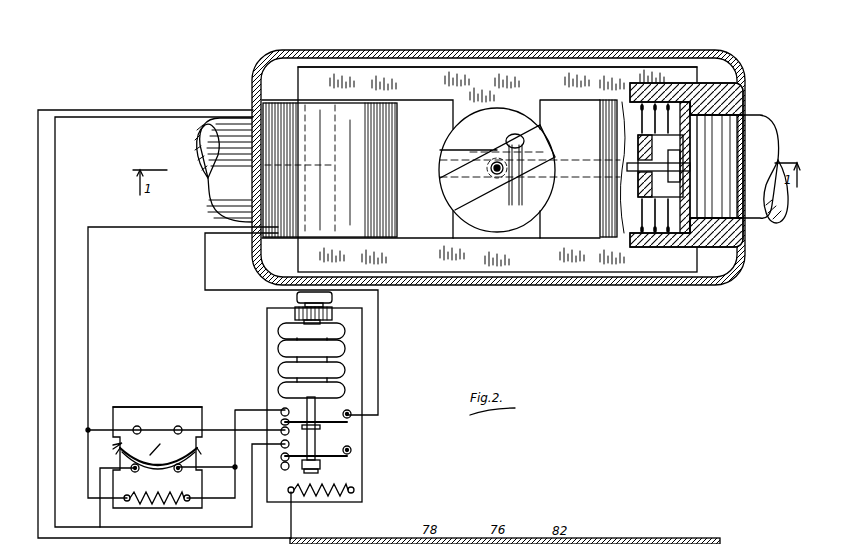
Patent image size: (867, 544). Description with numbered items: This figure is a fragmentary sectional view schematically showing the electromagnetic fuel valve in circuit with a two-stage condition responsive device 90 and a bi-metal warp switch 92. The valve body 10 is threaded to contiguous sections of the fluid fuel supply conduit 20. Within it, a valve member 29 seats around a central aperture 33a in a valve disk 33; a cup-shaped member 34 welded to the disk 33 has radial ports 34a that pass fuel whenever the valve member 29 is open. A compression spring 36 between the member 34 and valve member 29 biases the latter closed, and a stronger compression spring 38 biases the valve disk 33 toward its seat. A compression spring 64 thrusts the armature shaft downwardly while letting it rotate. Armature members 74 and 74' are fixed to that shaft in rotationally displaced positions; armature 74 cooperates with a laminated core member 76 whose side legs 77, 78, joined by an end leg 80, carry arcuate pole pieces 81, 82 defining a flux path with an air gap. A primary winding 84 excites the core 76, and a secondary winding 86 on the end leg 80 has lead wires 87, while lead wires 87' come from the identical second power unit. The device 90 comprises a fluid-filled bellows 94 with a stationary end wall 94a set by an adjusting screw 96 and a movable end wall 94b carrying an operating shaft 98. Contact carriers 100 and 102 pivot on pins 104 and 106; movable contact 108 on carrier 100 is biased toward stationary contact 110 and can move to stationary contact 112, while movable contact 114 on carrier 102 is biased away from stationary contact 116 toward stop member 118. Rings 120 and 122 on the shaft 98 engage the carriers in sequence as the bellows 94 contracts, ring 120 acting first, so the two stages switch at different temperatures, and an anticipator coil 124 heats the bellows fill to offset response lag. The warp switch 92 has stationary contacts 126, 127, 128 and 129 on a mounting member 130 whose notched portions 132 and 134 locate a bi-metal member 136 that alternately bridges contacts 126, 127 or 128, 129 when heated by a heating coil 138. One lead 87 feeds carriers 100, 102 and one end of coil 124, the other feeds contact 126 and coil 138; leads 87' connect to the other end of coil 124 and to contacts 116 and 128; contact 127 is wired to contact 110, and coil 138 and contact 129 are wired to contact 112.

The valve body 10 is at (742, 242).
The fluid fuel supply conduit 20 is at (765, 127).
The valve member 29 is at (690, 168).
The valve disk 33 is at (735, 104).
The central aperture 33a is at (690, 158).
The cup-shaped member 34 is at (640, 195).
The radial ports 34a is at (660, 218).
The compression spring 36 is at (640, 143).
The compression spring 38 is at (675, 86).
The compression spring 64 is at (495, 165).
The armature member 74 is at (516, 170).
The armature member 74' is at (478, 167).
The core member 76 is at (494, 83).
The side leg 77 is at (474, 265).
The side leg 78 is at (403, 78).
The end leg 80 is at (253, 176).
The pole piece 81 is at (508, 245).
The pole piece 82 is at (530, 63).
The primary winding 84 is at (607, 101).
The secondary winding 86 is at (278, 189).
The circuit connecting means 87 is at (232, 362).
The circuit connecting means 87' is at (164, 314).
The two stage temperature responsive circuit controlling device 90 is at (365, 490).
The warp switch 92 is at (128, 405).
The bellows 94 is at (340, 352).
The stationary end wall 94a is at (338, 325).
The movable end wall 94b is at (346, 395).
The adjusting screw 96 is at (297, 297).
The operating shaft 98 is at (318, 452).
The movable contact carrier 100 is at (352, 422).
The movable contact carrier 102 is at (319, 464).
The pin 104 is at (352, 414).
The pin 106 is at (352, 450).
The movable contact 108 is at (281, 420).
The stationary contact 110 is at (281, 429).
The stationary contact 112 is at (281, 410).
The movable contact 114 is at (281, 457).
The stationary contact 116 is at (281, 444).
The stop member 118 is at (281, 466).
The ring 120 is at (320, 426).
The ring 122 is at (320, 462).
The anticipator coil 124 is at (332, 497).
The stationary contact 126 is at (139, 427).
The stationary contact 127 is at (180, 427).
The stationary contact 128 is at (138, 471).
The stationary contact 129 is at (182, 470).
The mounting member 130 is at (130, 418).
The notched portion 132 is at (113, 447).
The notched portion 134 is at (158, 458).
The bi-metal member 136 is at (147, 453).
The heating coil 138 is at (165, 502).